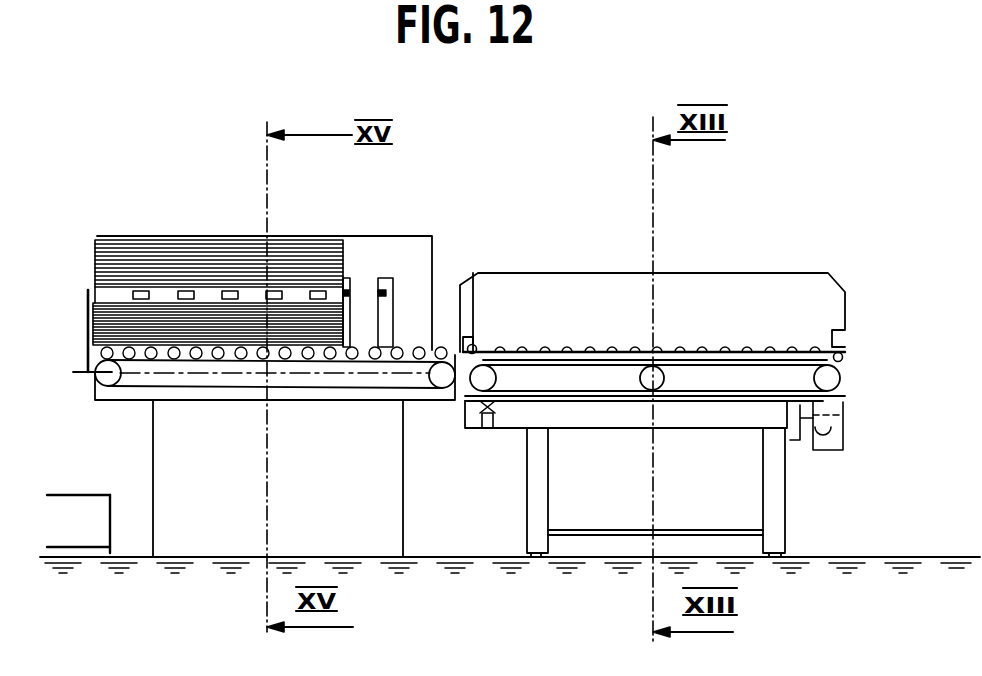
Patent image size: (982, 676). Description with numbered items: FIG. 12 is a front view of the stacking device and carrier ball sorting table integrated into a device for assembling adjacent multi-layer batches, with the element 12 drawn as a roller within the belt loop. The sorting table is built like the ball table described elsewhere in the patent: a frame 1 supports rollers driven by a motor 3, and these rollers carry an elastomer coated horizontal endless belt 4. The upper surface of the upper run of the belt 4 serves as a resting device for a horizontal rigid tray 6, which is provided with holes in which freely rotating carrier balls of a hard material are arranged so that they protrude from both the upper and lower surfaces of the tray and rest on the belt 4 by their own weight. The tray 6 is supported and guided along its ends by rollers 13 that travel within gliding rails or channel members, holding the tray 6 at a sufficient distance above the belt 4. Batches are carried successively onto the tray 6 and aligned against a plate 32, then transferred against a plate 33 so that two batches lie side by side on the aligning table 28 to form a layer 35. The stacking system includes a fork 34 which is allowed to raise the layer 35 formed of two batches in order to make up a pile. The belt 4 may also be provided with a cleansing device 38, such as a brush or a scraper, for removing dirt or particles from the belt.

The frame 1 is at (795, 505).
The motor 3 is at (797, 443).
The endless belt 4 is at (583, 401).
The tray 6 is at (750, 355).
The roller 12 is at (662, 368).
The rollers 13 is at (838, 330).
The aligning table 28 is at (345, 491).
The plate 32 is at (781, 296).
The plate 33 is at (352, 262).
The fork 34 is at (432, 263).
The layer 35 is at (350, 290).
The cleansing device 38 is at (485, 430).